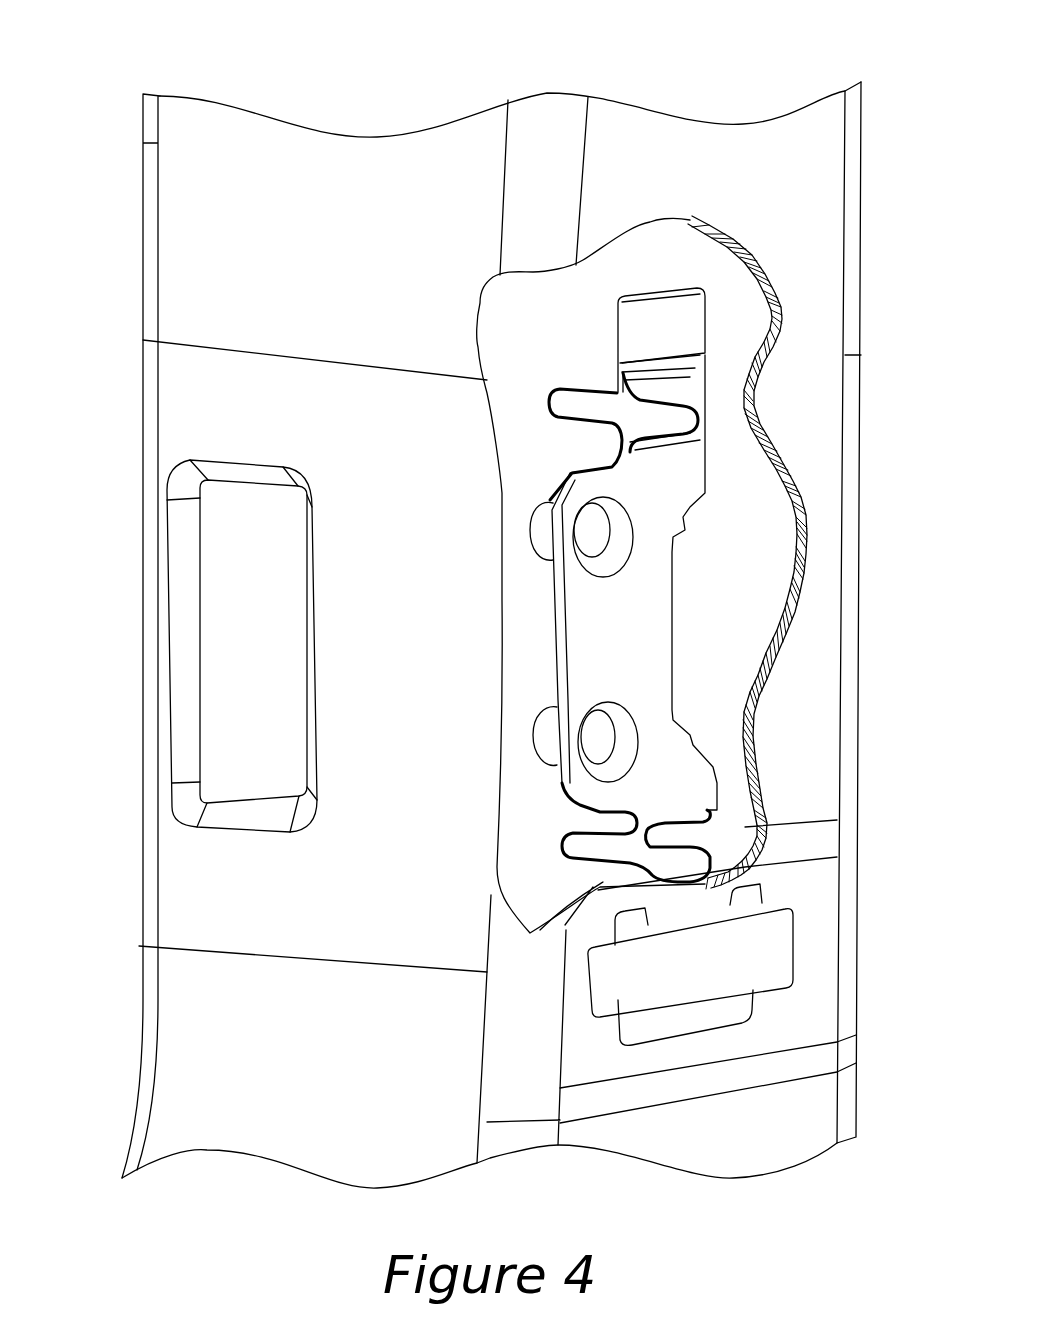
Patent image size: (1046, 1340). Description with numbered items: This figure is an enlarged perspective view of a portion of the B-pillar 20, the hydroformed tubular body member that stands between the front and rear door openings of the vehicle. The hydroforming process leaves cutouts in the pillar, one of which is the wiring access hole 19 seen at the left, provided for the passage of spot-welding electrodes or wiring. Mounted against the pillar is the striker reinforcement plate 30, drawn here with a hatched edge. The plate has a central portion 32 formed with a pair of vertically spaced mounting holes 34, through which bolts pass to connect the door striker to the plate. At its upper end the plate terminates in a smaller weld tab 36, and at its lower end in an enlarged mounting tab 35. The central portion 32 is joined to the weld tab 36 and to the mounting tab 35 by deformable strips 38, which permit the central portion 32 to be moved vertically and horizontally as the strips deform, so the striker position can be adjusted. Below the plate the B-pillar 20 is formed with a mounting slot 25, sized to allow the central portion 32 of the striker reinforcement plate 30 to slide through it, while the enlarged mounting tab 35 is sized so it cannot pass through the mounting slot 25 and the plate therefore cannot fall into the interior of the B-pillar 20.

The B-pillar 20 is at (555, 93).
The wiring access holes 19 is at (207, 707).
The striker reinforcement plate 30 is at (727, 638).
The central portion 32 is at (648, 657).
The mounting holes 34 is at (610, 540).
The weld tab 36 is at (670, 325).
The deformable strips 38 is at (553, 398).
The mounting tab 35 is at (772, 947).
The mounting slot 25 is at (752, 1010).